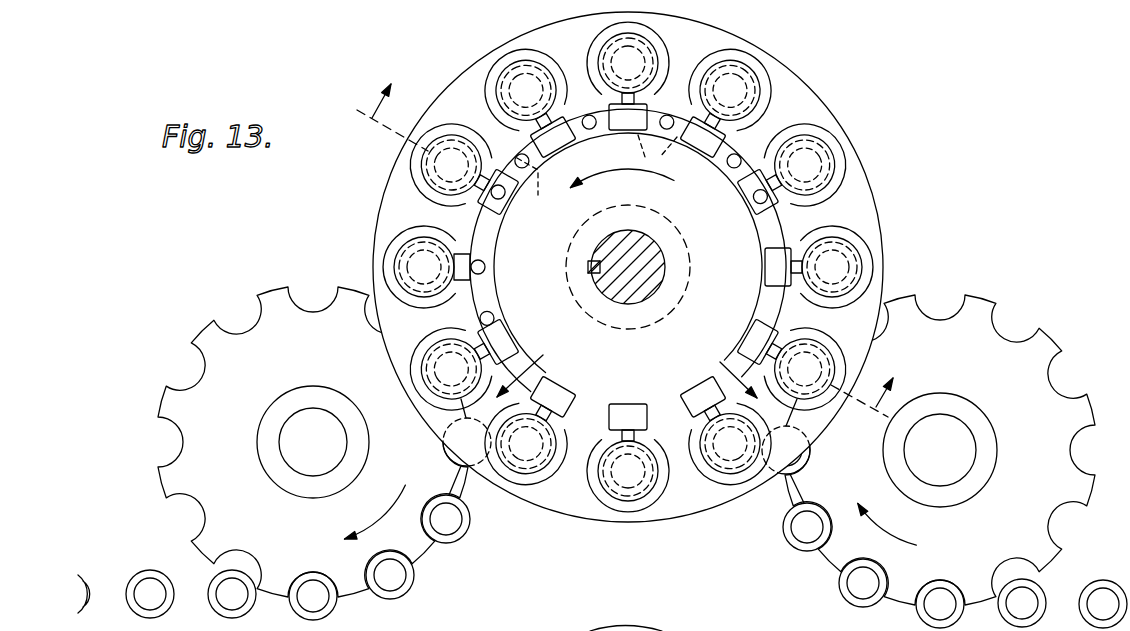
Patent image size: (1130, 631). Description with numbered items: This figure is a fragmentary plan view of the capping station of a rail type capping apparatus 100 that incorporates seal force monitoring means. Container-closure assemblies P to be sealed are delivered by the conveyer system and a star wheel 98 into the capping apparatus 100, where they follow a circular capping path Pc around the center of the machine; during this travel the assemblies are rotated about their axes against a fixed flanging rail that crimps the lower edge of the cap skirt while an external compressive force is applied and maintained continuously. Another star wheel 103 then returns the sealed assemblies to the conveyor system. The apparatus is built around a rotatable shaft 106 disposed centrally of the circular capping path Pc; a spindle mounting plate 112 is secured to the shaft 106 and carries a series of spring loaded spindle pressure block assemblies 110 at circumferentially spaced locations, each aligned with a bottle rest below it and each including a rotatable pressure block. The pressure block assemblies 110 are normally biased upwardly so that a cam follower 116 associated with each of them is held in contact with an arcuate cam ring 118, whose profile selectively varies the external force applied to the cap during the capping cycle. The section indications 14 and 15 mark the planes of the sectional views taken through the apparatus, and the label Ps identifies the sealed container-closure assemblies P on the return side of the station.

The capping apparatus 100 is at (658, 282).
The star wheel 103 is at (172, 405).
The star wheel 98 is at (1043, 360).
The rotatable shaft 106 is at (694, 240).
The spindle pressure block assemblies 110 is at (508, 70).
The spindle mounting plate 112 is at (877, 202).
The cam follower 116 is at (763, 299).
The arcuate cam ring 118 is at (483, 233).
The section line 14- 14 is at (616, 262).
The section line 15- 15 is at (627, 366).
The container-closure assemblies P is at (843, 590).
The product article (spacer) Ps is at (127, 578).
The circular capping path Pc is at (775, 118).